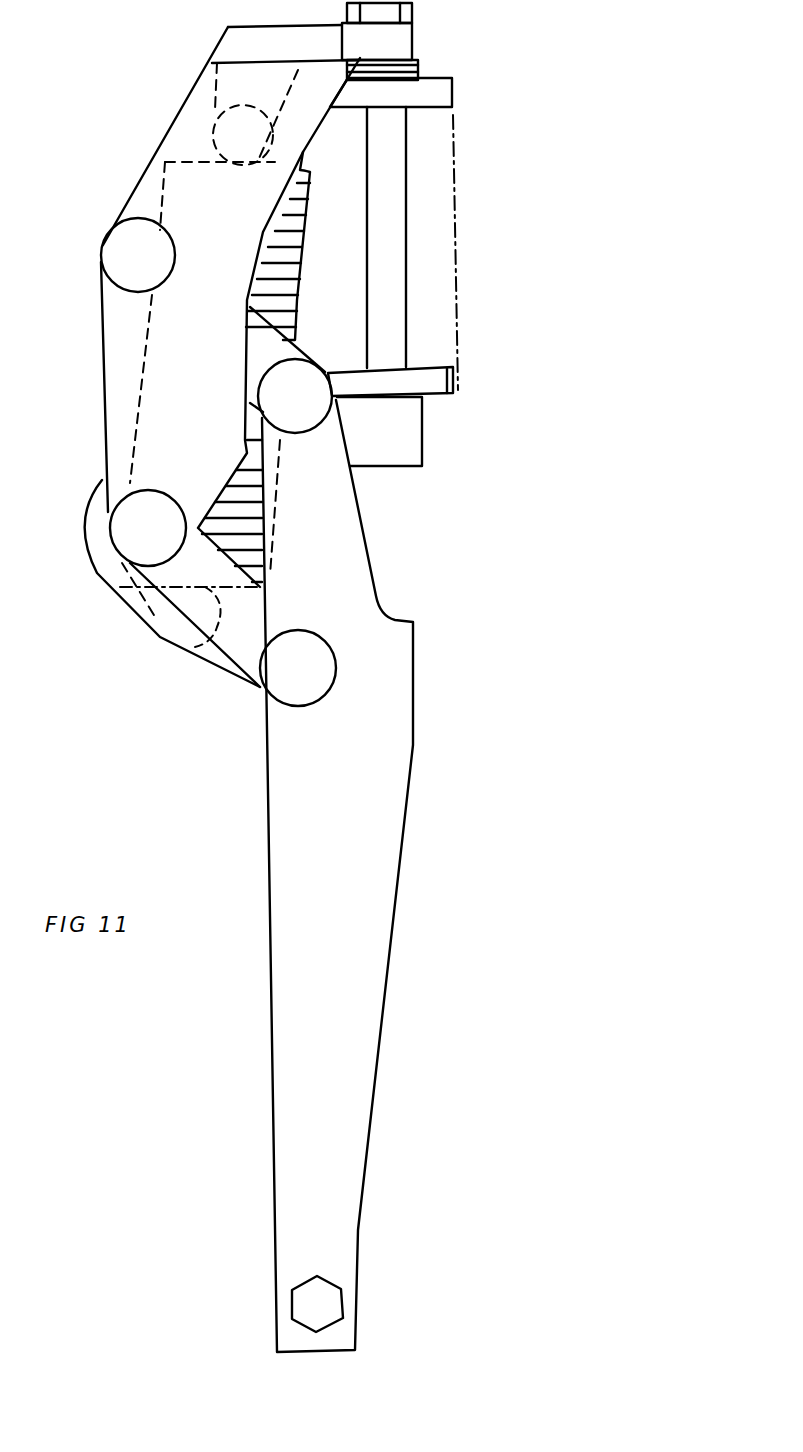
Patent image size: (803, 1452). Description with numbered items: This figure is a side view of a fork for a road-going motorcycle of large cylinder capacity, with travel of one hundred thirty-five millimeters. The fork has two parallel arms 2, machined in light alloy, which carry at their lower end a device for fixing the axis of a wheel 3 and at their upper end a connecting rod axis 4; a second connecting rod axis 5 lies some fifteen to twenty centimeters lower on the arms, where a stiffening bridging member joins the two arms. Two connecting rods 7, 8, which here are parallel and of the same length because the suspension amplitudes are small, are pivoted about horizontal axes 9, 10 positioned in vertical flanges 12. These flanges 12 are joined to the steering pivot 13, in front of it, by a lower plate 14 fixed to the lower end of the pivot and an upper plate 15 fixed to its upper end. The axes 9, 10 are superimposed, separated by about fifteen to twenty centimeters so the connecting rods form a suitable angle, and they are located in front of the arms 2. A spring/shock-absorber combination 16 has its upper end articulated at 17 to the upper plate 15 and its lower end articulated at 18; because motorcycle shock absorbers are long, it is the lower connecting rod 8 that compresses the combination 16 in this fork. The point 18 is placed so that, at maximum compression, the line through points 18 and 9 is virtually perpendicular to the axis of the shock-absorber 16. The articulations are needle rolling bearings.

The arms 2 is at (295, 945).
The axis of a wheel 3 is at (305, 1300).
The connecting rod axis 4 is at (307, 407).
The second connecting rod axis 5 is at (292, 678).
The connecting rod 7 is at (267, 357).
The lower connecting rod 8 is at (237, 628).
The horizontal axis 9 is at (120, 256).
The horizontal axis 10 is at (138, 532).
The vertical flanges 12 is at (120, 357).
The steering pivot 13 is at (393, 183).
The lower plate 14 is at (433, 386).
The upper plate 15 is at (383, 40).
The spring/shock-absorber combination 16 is at (285, 245).
The articulation 17 is at (238, 135).
The articulation 18 is at (177, 627).